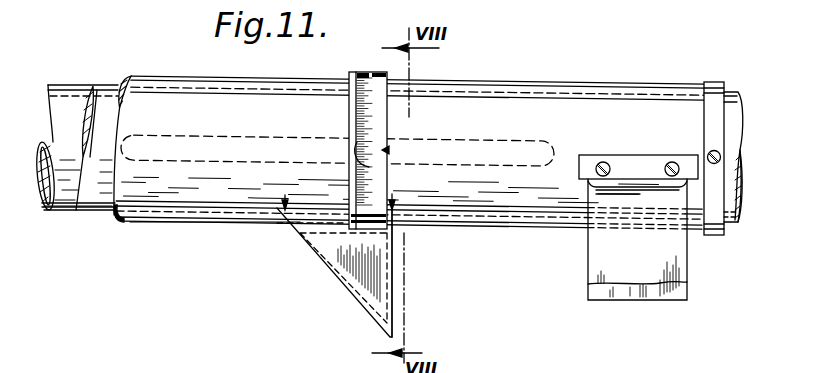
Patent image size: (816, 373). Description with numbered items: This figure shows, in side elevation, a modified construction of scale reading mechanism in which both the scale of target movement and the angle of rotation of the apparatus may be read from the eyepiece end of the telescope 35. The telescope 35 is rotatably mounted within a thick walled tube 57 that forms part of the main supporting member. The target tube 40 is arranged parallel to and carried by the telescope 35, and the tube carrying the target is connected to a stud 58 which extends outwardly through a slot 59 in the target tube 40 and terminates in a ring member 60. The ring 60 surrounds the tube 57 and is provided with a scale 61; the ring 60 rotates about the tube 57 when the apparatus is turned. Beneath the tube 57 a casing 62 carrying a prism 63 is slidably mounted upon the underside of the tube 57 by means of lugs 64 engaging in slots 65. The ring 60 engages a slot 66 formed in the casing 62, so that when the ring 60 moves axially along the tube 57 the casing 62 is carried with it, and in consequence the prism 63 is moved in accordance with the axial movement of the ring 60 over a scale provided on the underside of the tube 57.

The telescope 35 is at (110, 108).
The target tube 40 is at (57, 207).
The thick walled tube 57 is at (611, 108).
The stud 58 is at (389, 150).
The slot 59 is at (548, 159).
The ring member 60 is at (352, 124).
The scale 61 is at (360, 73).
The casing 62 is at (322, 266).
The prism 63 is at (330, 284).
The lugs 64 is at (268, 213).
The slots 65 is at (178, 223).
The slot 66 is at (401, 237).